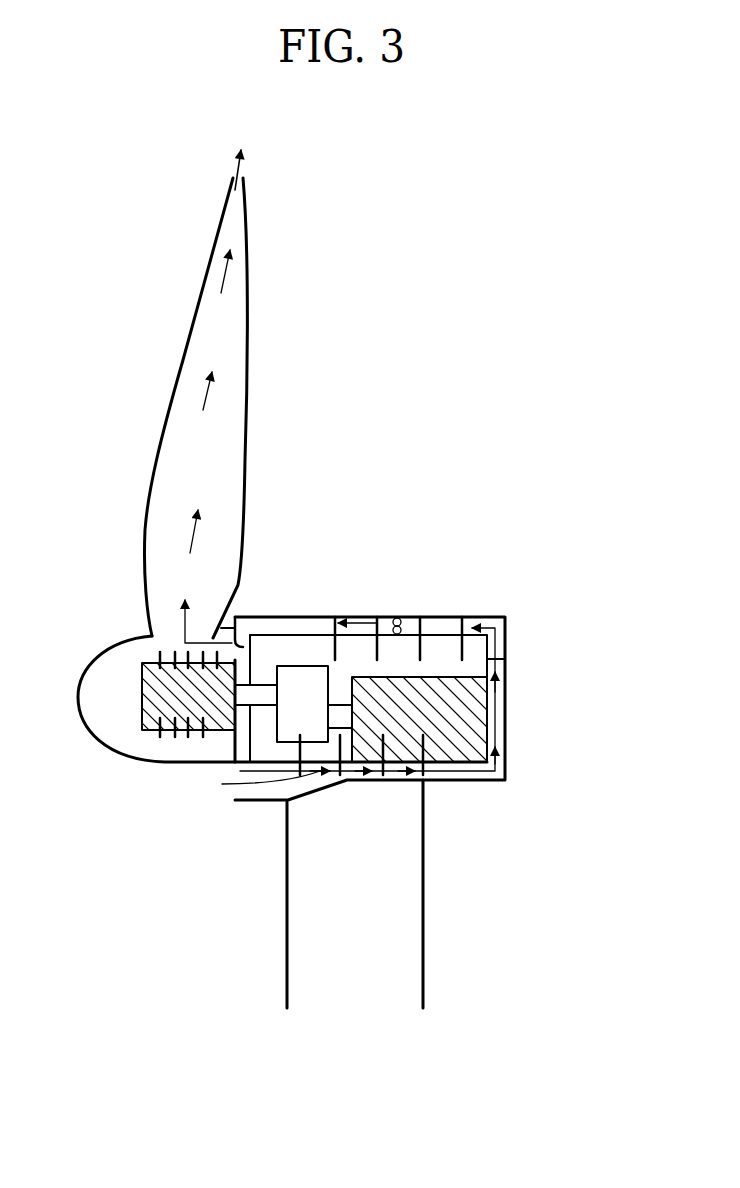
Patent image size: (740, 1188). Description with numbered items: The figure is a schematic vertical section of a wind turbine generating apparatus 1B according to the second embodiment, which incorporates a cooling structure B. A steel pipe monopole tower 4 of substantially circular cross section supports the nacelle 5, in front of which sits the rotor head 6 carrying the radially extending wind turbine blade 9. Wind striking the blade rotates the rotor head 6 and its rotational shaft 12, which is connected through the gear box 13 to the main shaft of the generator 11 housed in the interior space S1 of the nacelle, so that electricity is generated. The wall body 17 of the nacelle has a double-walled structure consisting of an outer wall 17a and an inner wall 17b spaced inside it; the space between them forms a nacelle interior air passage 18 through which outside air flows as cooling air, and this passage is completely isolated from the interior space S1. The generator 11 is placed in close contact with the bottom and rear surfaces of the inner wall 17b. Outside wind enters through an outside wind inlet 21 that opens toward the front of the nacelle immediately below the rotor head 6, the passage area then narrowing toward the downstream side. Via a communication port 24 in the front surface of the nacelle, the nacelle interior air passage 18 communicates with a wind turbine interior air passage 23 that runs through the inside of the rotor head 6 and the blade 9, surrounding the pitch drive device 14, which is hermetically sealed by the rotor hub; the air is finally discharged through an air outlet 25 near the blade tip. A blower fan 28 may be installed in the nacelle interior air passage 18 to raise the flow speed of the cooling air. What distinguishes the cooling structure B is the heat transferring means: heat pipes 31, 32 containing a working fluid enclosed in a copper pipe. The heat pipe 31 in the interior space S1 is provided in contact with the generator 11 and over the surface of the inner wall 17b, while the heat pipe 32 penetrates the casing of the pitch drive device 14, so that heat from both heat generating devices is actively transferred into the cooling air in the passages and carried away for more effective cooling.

The wind turbine generating apparatus 1B is at (478, 243).
The tower 4 is at (423, 905).
The nacelle 5 is at (367, 613).
The rotor head 6 is at (103, 653).
The wind turbine blade 9 is at (185, 352).
The generator 11 is at (452, 748).
The rotational shaft 12 is at (268, 682).
The gear box 13 is at (313, 666).
The pitch drive device 14 is at (142, 697).
The wall body 17 is at (610, 612).
The outer wall 17a is at (505, 640).
The inner wall 17b is at (487, 660).
The nacelle interior air passage 18 is at (505, 705).
The outside wind inlet 21 is at (233, 802).
The wind turbine interior air passage 23 is at (220, 428).
The communication port 24 is at (235, 650).
The air outlet 25 is at (240, 173).
The blower fan 28 is at (413, 616).
The heat pipe 31 is at (423, 625).
The heat pipe 32 is at (158, 733).
The interior space S1 is at (454, 667).
The cooling structure B is at (133, 852).